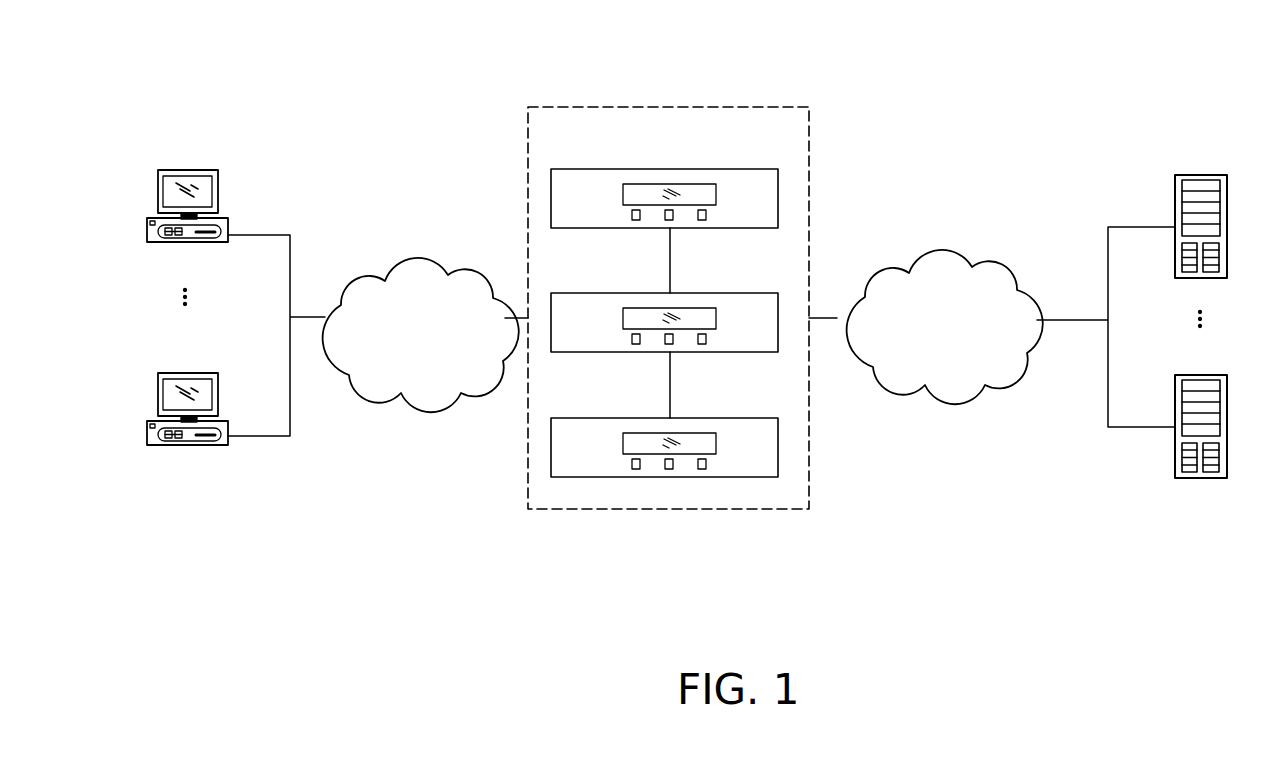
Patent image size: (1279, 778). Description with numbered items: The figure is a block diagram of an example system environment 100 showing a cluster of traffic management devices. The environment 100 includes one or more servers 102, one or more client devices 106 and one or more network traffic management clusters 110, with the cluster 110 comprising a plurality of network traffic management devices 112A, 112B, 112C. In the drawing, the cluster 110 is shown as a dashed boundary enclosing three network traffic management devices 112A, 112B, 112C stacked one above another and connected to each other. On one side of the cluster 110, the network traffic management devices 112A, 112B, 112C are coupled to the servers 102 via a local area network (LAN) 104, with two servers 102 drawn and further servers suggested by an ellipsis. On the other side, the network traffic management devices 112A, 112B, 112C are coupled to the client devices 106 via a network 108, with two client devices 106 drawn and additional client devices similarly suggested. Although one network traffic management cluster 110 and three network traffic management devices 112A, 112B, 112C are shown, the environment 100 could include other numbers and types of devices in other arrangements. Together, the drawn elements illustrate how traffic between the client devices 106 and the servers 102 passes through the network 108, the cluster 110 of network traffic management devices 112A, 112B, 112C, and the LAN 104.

The system environment 100 is at (1166, 58).
The server 102 is at (1172, 178).
The local area network (LAN) 104 is at (959, 351).
The client device 106 is at (230, 233).
The network 108 is at (395, 354).
The network traffic management cluster 110 is at (785, 107).
The network traffic management device 112A is at (705, 169).
The network traffic management device 112B is at (705, 293).
The network traffic management device 112C is at (705, 418).